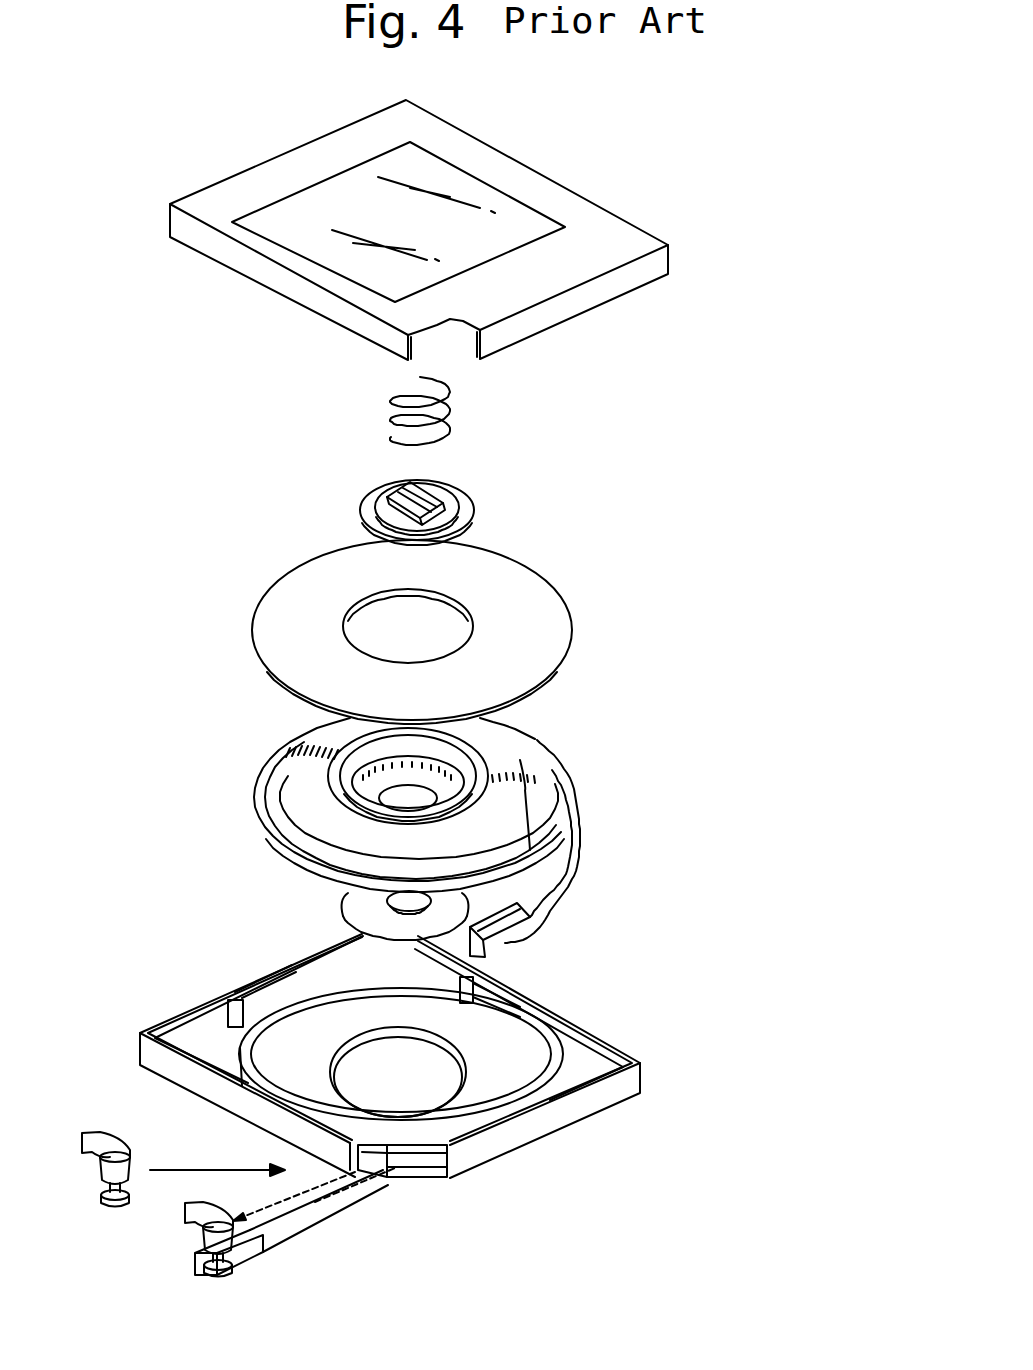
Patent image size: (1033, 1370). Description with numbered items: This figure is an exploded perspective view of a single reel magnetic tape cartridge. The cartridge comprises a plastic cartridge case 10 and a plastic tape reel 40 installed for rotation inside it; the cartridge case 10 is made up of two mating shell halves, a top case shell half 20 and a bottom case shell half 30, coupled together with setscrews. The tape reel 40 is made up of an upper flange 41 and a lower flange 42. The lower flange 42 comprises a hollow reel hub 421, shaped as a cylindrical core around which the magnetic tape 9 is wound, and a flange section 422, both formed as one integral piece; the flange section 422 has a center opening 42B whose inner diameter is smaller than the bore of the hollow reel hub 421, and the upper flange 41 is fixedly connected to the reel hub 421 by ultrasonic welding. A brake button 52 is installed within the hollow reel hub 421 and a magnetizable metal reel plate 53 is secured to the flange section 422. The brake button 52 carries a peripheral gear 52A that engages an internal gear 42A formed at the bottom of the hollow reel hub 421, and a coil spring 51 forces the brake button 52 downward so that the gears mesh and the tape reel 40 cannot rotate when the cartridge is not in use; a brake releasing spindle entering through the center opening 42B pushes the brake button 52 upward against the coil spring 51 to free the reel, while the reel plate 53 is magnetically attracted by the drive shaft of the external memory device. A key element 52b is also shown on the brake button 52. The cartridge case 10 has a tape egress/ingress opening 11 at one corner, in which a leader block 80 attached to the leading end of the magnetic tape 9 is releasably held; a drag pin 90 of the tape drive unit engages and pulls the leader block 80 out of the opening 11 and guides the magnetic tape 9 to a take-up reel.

The cartridge case 10 is at (632, 184).
The top case shell half 20 is at (637, 225).
The coil spring 51 is at (457, 412).
The brake button 52 is at (480, 489).
The peripheral gear 52A is at (477, 527).
The key block 52b is at (377, 483).
The tape reel 40 is at (680, 555).
The upper flange 41 is at (560, 610).
The lower flange 42 is at (678, 730).
The hollow reel hub 421 is at (487, 743).
The flange section 422 is at (550, 760).
The internal gear 42A is at (300, 727).
The center opening 42B is at (357, 800).
The magnetic tape 9 is at (583, 802).
The reel plate 53 is at (357, 903).
The leader block 80 is at (518, 930).
The bottom case shell half 30 is at (607, 1037).
The tape egress/ingress opening 11 is at (430, 1180).
The drag pin 90 is at (87, 1153).